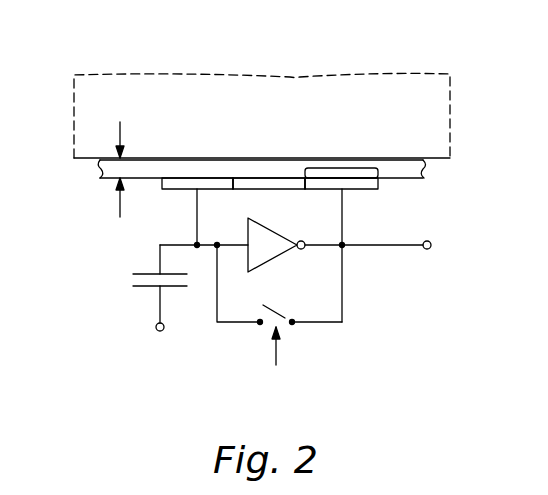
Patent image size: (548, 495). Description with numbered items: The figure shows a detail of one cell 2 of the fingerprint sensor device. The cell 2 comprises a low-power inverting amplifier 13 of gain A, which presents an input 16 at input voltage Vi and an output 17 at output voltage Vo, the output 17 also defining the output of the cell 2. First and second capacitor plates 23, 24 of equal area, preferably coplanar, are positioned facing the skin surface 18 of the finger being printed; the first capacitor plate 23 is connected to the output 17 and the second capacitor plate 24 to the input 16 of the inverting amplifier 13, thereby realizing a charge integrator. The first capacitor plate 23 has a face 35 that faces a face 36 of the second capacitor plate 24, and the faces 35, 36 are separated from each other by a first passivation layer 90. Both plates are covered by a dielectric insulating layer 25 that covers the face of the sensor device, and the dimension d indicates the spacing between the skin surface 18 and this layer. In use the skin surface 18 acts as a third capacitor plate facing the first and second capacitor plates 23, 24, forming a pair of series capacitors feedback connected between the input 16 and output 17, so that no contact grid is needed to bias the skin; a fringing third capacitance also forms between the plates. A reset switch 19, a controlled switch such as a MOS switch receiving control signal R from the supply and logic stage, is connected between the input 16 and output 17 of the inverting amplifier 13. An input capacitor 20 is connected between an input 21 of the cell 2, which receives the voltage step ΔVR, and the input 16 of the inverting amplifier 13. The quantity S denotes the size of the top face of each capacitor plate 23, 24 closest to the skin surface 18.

The cell 2 is at (387, 345).
The inverting amplifier 13 is at (279, 258).
The input 16 is at (218, 244).
The output 17 is at (427, 249).
The skin surface 18 is at (295, 78).
The reset switch 19 is at (280, 312).
The input capacitor 20 is at (137, 290).
The input 21 is at (165, 328).
The first capacitor plate 23 is at (368, 190).
The second capacitor plate 24 is at (180, 190).
The dielectric insulating layer 25 is at (418, 180).
The face 35 is at (305, 184).
The face 36 is at (233, 186).
The first passivation layer 90 is at (278, 190).
The size of the top face S is at (342, 170).
The distance d is at (126, 170).
The control signal R is at (282, 347).